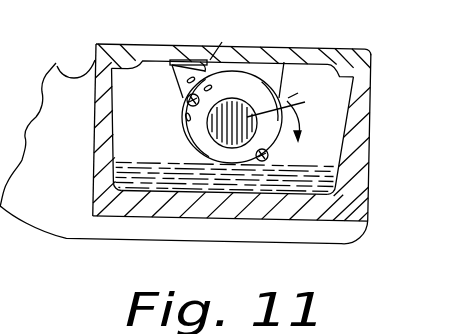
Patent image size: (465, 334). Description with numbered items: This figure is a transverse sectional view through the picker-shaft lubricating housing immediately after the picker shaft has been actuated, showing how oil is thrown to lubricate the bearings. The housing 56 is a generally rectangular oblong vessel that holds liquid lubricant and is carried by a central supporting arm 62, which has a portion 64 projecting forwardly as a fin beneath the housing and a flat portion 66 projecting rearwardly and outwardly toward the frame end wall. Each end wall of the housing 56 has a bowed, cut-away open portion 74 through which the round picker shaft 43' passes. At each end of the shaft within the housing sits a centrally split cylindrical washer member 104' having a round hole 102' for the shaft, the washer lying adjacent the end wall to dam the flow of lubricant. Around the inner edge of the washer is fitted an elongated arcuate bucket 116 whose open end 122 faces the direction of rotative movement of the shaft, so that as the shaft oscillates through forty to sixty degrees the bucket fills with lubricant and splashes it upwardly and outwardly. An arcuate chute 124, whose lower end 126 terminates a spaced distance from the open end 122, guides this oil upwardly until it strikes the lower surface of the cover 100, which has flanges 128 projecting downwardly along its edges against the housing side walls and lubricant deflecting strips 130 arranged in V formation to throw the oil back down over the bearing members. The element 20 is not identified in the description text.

The rotary valve member 20 is at (200, 152).
The picker shaft 43' is at (315, 85).
The housing 56 is at (153, 214).
The central supporting arm 62 is at (66, 80).
The portion 64 is at (303, 238).
The flat portion 66 is at (64, 227).
The open portion 74 is at (270, 72).
The cover 100 is at (180, 43).
The hole 102' is at (297, 106).
The washer member 104' is at (313, 132).
The bucket 116 is at (185, 170).
The open end 122 is at (232, 221).
The arcuate chute 124 is at (183, 111).
The lower end 126 is at (190, 155).
The flanges 128 is at (119, 36).
The lubricant deflecting strips 130 is at (240, 39).